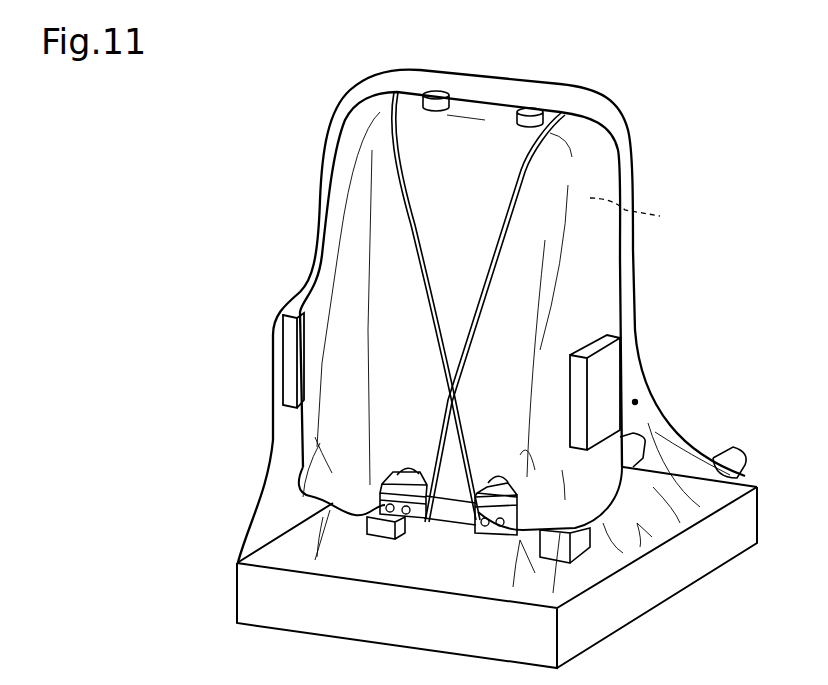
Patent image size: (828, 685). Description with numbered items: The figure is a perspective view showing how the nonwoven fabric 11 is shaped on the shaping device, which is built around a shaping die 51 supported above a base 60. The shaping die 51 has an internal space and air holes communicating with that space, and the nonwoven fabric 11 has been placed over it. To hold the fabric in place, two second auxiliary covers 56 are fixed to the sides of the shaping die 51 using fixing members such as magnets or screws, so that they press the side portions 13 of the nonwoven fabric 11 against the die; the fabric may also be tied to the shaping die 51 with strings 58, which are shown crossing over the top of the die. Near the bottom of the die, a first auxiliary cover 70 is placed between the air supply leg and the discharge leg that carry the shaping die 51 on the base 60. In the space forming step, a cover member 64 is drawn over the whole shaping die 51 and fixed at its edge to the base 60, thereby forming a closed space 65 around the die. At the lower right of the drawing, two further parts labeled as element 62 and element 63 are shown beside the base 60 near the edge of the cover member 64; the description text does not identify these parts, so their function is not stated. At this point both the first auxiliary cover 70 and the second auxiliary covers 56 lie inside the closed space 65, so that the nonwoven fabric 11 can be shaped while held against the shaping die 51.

The nonwoven fabric 11 is at (533, 245).
The side portions 13 is at (600, 277).
The shaping die 51 is at (645, 211).
The second auxiliary covers 56 is at (290, 371).
The strings 58 is at (400, 92).
The base 60 is at (325, 613).
The hinge member 62 is at (648, 423).
The pivot shaft 63 is at (745, 455).
The cover member 64 is at (626, 114).
The closed space 65 is at (637, 402).
The first auxiliary cover 70 is at (442, 517).